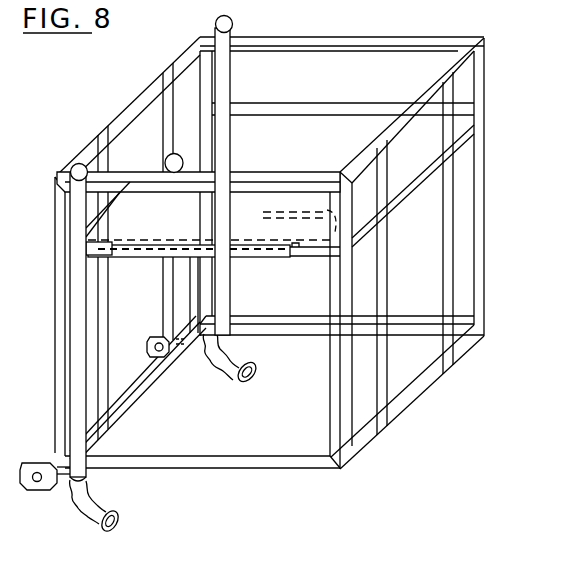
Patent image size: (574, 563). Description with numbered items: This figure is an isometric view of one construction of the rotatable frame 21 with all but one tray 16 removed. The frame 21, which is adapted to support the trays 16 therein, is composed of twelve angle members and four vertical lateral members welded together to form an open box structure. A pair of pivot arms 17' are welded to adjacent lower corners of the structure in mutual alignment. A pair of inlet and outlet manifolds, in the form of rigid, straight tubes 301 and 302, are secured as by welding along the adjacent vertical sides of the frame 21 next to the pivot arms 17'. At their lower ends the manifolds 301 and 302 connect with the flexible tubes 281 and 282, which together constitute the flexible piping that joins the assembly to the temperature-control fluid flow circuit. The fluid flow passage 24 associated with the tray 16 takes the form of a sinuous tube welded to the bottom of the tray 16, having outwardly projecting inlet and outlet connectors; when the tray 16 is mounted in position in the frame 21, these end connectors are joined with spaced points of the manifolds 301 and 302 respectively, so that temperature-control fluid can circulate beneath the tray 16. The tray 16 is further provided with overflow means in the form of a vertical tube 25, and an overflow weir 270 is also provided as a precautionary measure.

The rotatable frame 21 is at (421, 38).
The tray 16 is at (355, 110).
The overflow weir 270 is at (267, 257).
The fluid flow passage 24 is at (299, 250).
The vertical tube 25 is at (182, 163).
The inlet manifold 301 is at (78, 347).
The outlet manifold 302 is at (230, 77).
The flexible tube 281 is at (75, 520).
The flexible tube 282 is at (241, 382).
The pivot arm 17' is at (102, 399).